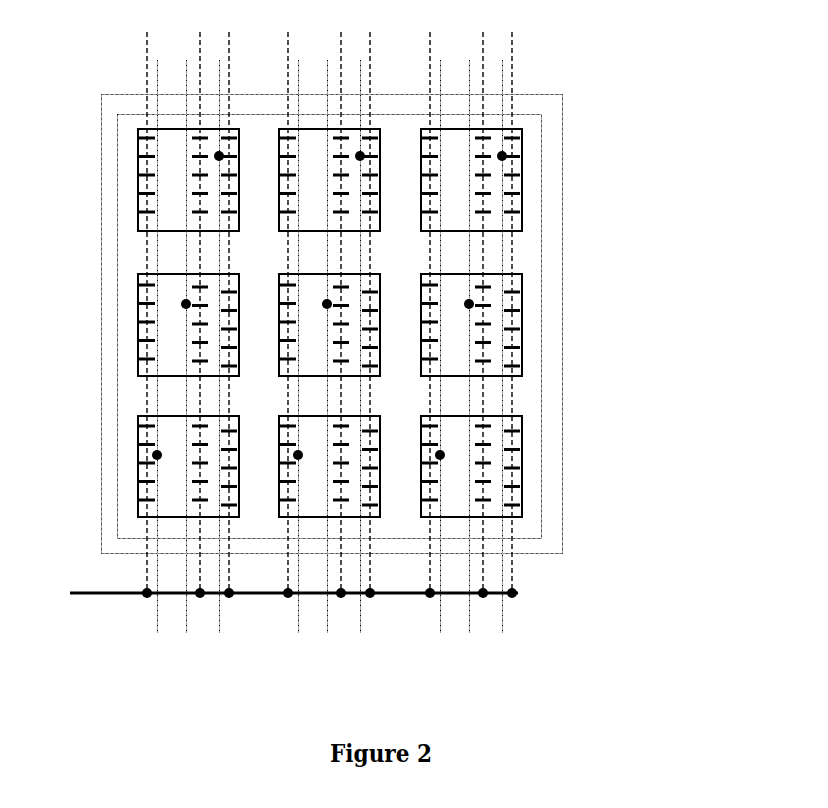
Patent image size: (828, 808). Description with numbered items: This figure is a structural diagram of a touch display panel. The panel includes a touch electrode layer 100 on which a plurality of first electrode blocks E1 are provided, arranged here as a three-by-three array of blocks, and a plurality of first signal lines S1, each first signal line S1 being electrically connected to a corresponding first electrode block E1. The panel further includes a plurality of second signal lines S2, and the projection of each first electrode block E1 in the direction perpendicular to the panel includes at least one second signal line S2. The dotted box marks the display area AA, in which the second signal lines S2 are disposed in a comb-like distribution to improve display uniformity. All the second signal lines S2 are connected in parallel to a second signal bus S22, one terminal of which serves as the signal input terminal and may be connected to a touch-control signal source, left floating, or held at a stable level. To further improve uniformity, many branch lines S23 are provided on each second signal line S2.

The touch electrode layer 100 is at (395, 301).
The display area AA is at (416, 327).
The first electrode block E1 is at (278, 287).
The second signal line S2 is at (333, 297).
The first signal line S1 is at (330, 381).
The second signal bus S22 is at (289, 613).
The branch line S23 is at (272, 341).